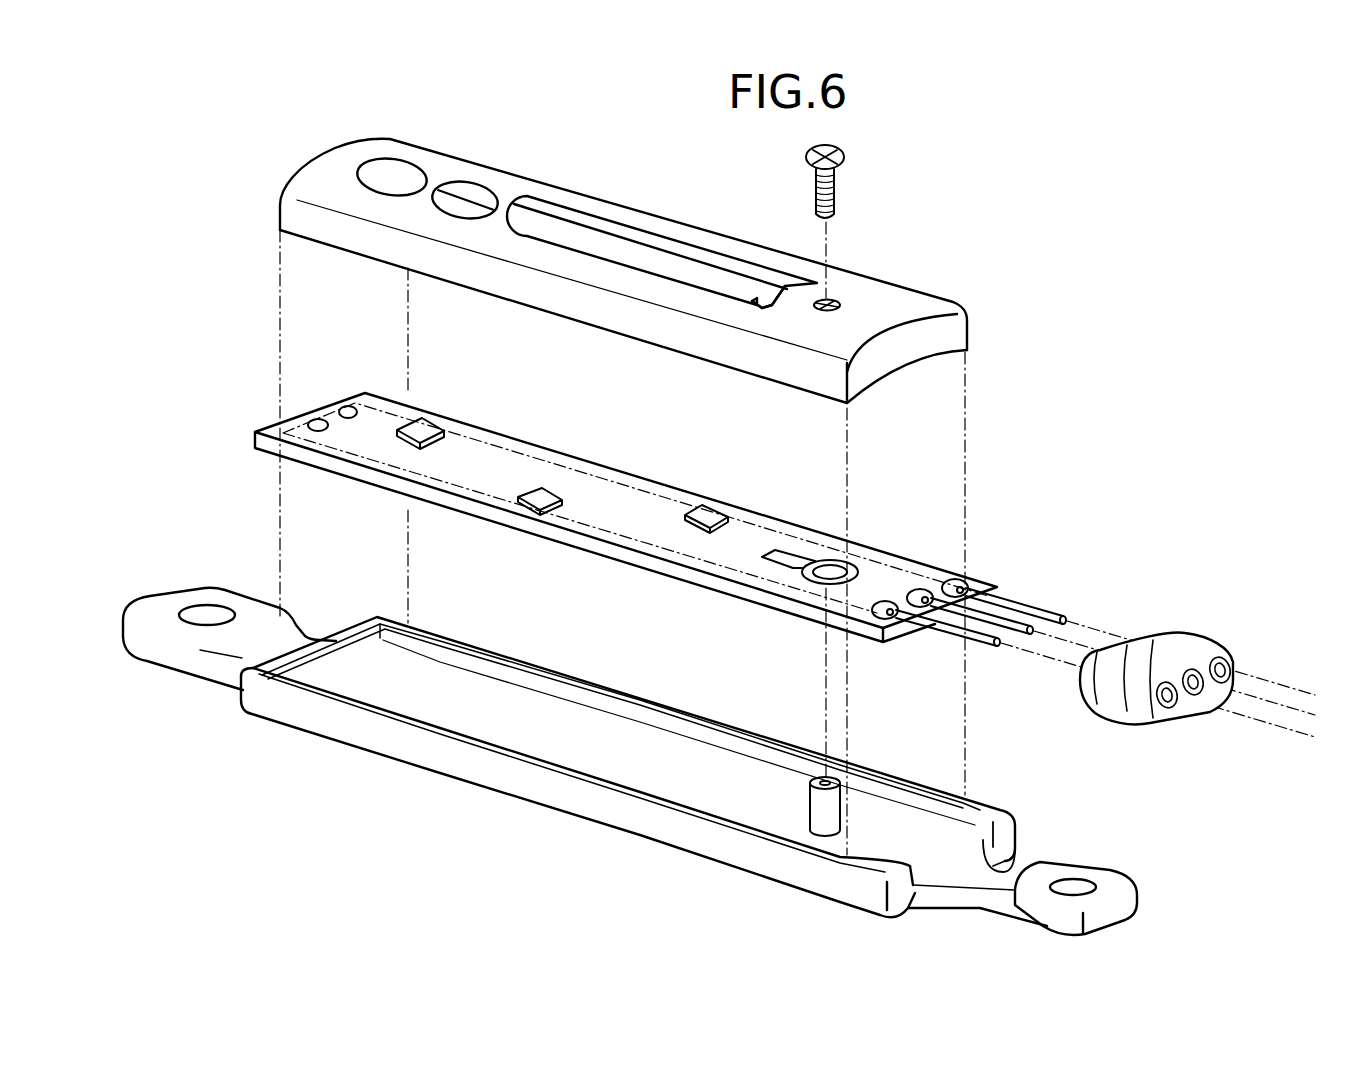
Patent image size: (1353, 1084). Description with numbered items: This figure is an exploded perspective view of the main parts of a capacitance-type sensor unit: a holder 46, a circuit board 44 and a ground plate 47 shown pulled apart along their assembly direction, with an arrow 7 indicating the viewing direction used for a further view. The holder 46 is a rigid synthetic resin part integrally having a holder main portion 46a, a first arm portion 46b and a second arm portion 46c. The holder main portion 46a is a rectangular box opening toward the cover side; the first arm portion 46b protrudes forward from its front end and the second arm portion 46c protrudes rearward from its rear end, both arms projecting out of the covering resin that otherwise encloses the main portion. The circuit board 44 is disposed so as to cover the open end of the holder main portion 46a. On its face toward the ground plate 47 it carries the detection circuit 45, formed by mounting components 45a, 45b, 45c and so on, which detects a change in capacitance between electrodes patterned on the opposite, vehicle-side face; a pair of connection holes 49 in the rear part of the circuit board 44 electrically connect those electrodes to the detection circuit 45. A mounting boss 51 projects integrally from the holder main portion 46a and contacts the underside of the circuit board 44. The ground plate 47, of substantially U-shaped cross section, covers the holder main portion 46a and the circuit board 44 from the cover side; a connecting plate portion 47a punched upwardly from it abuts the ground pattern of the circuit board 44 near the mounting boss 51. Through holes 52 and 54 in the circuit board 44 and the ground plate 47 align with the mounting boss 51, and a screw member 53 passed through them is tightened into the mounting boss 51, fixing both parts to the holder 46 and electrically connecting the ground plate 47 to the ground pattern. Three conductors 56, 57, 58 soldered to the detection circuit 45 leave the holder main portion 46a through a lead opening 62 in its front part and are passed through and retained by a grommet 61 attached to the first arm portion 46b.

The circuit board 44 is at (870, 542).
The detection circuit 45 is at (540, 450).
The component 45a is at (418, 428).
The component 45b is at (535, 505).
The component 45c is at (717, 512).
The holder 46 is at (455, 783).
The holder main portion 46a is at (548, 788).
The first arm portion 46b is at (1110, 883).
The second arm portion 46c is at (172, 603).
The ground plate 47 is at (900, 298).
The connecting plate portion 47a is at (765, 285).
The connection holes 49 is at (346, 406).
The mounting boss 51 is at (822, 812).
The through hole 52 is at (800, 573).
The screw member 53 is at (843, 152).
The through hole 54 is at (840, 302).
The conductor 56 is at (950, 628).
The conductor 57 is at (1010, 628).
The conductor 58 is at (1017, 605).
The grommet 61 is at (1180, 637).
The lead opening 62 is at (1007, 877).
The arrow 7 is at (610, 600).